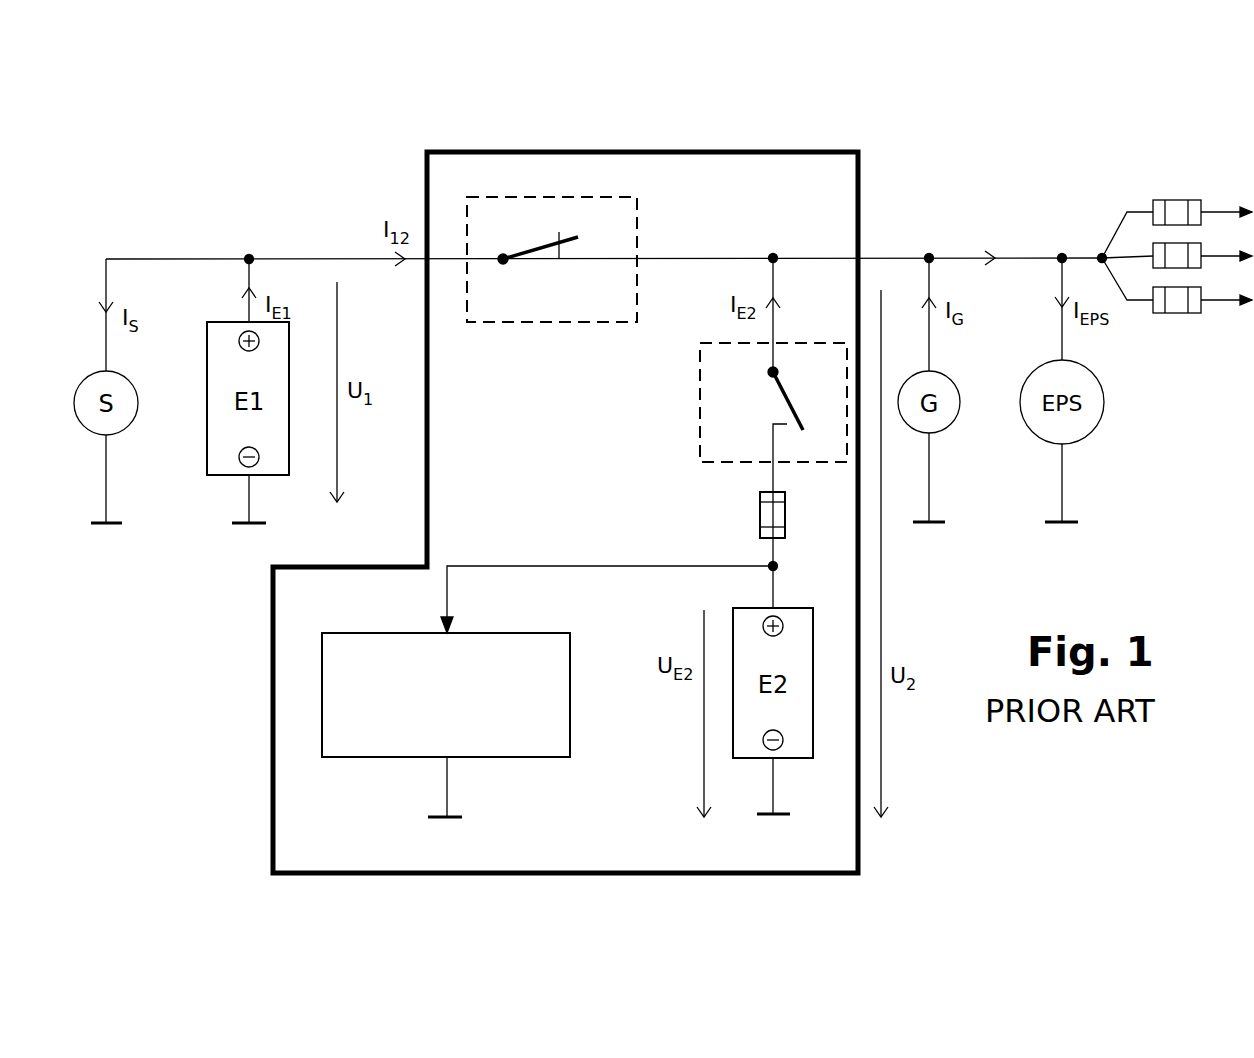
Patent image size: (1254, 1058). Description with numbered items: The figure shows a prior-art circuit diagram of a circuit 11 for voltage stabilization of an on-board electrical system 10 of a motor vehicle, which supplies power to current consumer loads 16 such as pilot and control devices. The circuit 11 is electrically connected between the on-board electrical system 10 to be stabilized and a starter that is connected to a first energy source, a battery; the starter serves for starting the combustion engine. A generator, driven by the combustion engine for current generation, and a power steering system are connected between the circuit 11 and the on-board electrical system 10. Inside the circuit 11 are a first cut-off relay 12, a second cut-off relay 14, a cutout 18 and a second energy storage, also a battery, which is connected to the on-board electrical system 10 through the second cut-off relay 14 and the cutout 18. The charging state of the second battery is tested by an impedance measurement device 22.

The on-board electrical system 10 is at (1177, 235).
The circuit 11 is at (760, 140).
The first cut-off relay 12 is at (516, 197).
The second cut-off relay 14 is at (700, 405).
The current consumer loads 16 is at (1195, 218).
The cutout 18 is at (760, 513).
The impedance measurement device 22 is at (335, 695).